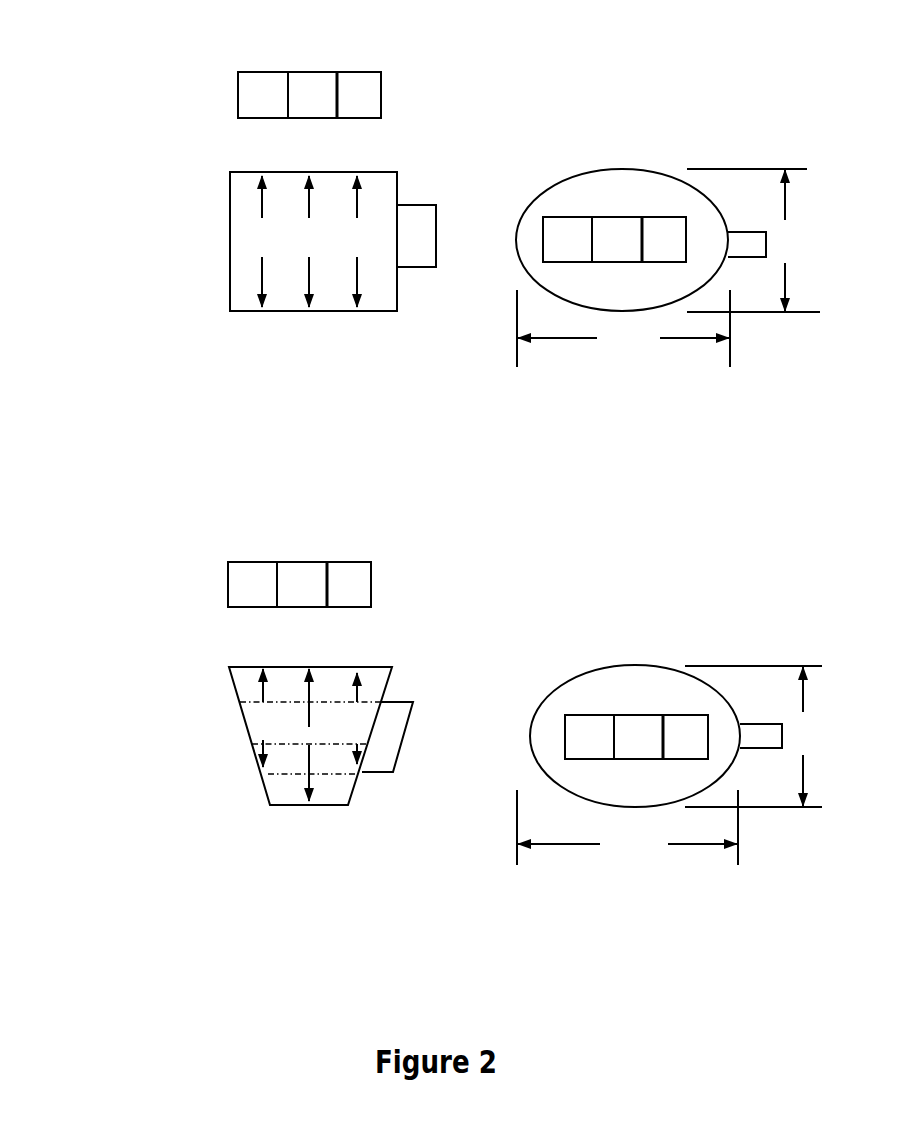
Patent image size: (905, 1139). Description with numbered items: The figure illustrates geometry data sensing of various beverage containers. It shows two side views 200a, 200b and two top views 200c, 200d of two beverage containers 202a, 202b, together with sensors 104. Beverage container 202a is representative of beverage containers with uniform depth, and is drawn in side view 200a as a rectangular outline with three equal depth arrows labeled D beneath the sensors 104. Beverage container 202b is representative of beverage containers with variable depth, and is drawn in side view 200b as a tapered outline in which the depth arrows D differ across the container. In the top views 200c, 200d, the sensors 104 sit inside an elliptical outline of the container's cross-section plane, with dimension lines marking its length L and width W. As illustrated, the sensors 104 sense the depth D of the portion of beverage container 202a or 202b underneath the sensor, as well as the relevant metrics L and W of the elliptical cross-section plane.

The sensors 104 is at (233, 72).
The beverage container 202a is at (233, 207).
The beverage container 202b is at (234, 733).
The side view 200a is at (68, 240).
The side view 200b is at (83, 638).
The top view 200c is at (653, 40).
The top view 200d is at (653, 462).